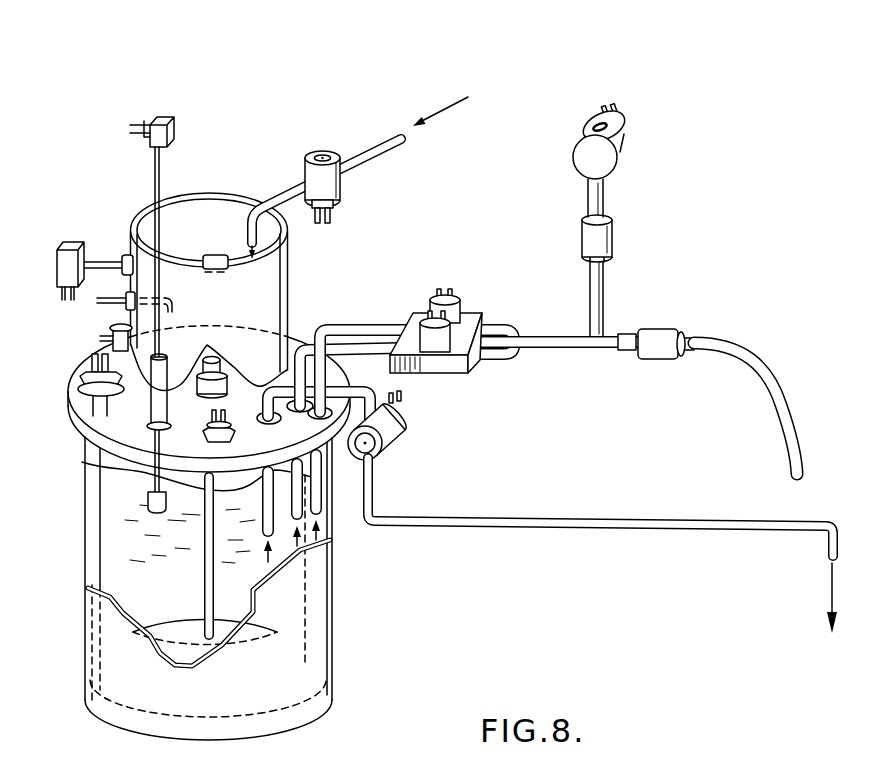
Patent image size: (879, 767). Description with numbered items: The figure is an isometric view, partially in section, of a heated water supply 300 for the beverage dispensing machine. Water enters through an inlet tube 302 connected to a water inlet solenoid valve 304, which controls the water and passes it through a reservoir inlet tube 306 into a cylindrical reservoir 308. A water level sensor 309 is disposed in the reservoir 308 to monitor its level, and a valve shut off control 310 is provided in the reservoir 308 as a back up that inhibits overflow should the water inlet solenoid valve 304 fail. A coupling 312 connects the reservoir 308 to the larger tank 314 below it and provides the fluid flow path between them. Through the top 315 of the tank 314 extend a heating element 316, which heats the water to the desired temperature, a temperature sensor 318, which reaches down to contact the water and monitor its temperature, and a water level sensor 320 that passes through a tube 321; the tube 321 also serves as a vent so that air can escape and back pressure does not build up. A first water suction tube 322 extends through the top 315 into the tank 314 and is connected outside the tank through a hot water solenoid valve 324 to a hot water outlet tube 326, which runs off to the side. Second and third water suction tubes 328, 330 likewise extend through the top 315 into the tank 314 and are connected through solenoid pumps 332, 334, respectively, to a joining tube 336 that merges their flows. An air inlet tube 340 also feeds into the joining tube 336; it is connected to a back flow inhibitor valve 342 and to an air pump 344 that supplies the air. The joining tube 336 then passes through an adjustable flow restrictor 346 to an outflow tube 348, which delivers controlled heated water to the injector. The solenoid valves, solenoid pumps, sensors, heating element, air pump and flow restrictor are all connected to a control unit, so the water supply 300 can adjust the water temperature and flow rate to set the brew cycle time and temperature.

The heated water supply 300 is at (531, 86).
The inlet tube 302 is at (378, 145).
The water inlet solenoid valve 304 is at (319, 152).
The reservoir inlet tube 306 is at (298, 202).
The reservoir 308 is at (268, 233).
The water level sensor 309 is at (100, 312).
The valve shut off control 310 is at (62, 262).
The coupling 312 is at (210, 356).
The tank 314 is at (138, 563).
The top 315 is at (80, 362).
The heating element 316 is at (88, 553).
The temperature sensor 318 is at (104, 445).
The water level sensor 320 is at (86, 532).
The tube 321 is at (104, 420).
The first water suction tube 322 is at (272, 522).
The hot water solenoid valve 324 is at (381, 442).
The hot water outlet tube 326 is at (575, 516).
The second water suction tube 328 is at (300, 518).
The third water suction tube 330 is at (315, 508).
The solenoid pump 332 is at (443, 367).
The solenoid pump 334 is at (460, 312).
The joining tube 336 is at (565, 350).
The air inlet tube 340 is at (590, 296).
The back flow inhibitor valve 342 is at (608, 233).
The air pump 344 is at (610, 163).
The adjustable flow restrictor 346 is at (652, 357).
The outflow tube 348 is at (771, 400).